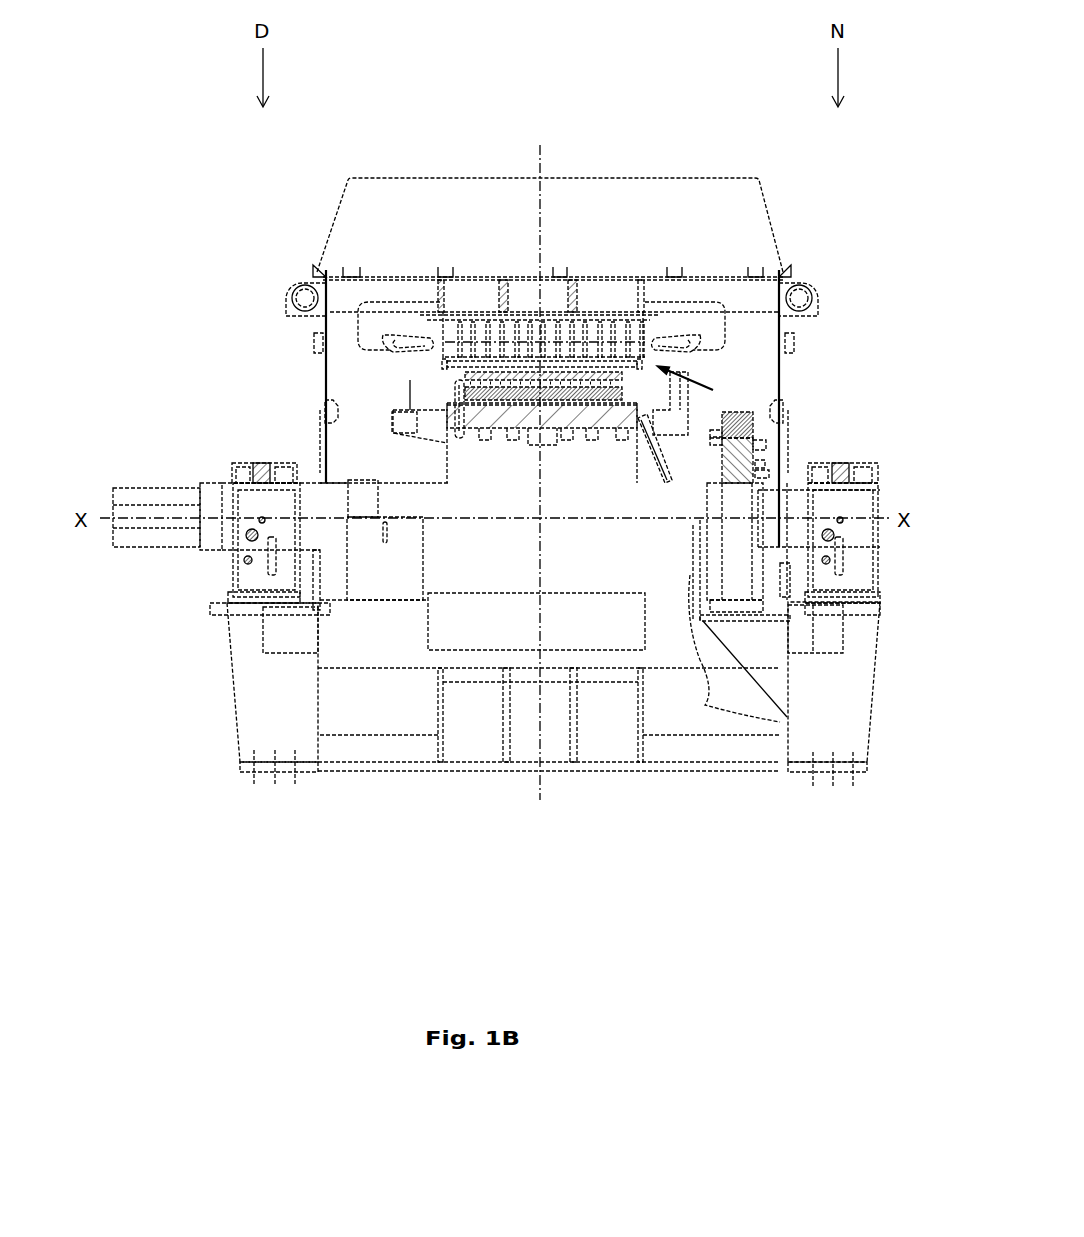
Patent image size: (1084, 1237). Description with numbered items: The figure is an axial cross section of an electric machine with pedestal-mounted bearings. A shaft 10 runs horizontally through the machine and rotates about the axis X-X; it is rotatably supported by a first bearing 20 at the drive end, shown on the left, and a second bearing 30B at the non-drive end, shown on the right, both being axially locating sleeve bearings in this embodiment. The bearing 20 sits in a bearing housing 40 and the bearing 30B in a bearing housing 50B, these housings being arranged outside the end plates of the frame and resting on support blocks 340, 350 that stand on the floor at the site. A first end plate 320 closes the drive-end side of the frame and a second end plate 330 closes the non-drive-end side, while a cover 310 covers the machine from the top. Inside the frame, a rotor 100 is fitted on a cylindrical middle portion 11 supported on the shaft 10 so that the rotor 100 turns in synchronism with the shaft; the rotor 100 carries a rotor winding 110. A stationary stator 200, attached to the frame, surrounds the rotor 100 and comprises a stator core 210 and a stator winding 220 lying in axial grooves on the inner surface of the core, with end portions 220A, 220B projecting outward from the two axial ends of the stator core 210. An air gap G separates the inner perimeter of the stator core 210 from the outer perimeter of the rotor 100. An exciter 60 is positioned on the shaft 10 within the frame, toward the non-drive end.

The shaft 10 is at (155, 505).
The cylindrical middle portion 11 is at (470, 445).
The bearing 20 is at (268, 462).
The bearing 30B is at (838, 462).
The bearing housing 40 is at (246, 572).
The bearing housing 50B is at (867, 563).
The exciter 60 is at (753, 435).
The rotor 100 is at (463, 373).
The rotor winding 110 is at (623, 380).
The stator 200 is at (488, 324).
The stator core 210 is at (608, 322).
The stator winding 220 is at (557, 324).
The end portion 220A is at (397, 335).
The end portion 220B is at (690, 335).
The cover 310 is at (718, 178).
The end plate 320 is at (322, 372).
The end plate 330 is at (785, 378).
The support block 340 is at (283, 745).
The support block 350 is at (818, 740).
The air gap G is at (699, 384).